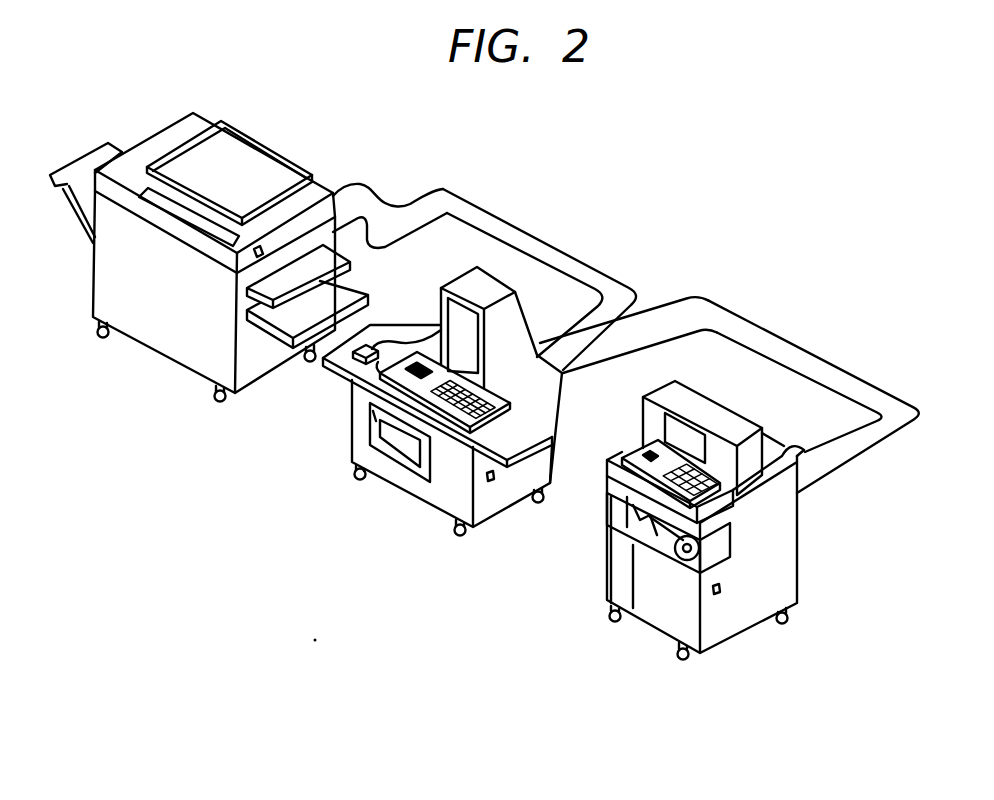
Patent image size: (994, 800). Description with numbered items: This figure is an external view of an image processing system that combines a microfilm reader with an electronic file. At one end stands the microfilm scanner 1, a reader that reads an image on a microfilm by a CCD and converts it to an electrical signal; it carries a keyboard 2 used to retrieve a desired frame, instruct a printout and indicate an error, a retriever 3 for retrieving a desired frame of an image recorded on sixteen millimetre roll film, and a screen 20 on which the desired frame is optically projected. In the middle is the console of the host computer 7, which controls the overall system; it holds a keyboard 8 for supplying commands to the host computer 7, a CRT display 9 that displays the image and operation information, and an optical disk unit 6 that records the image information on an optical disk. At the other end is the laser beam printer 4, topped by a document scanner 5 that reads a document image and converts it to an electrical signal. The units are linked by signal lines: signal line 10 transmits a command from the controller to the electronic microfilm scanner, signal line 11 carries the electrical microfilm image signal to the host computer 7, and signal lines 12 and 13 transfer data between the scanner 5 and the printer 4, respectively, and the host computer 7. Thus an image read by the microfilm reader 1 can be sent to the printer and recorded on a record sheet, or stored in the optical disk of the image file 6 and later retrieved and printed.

The microfilm scanner 1 is at (773, 567).
The keyboard 2 is at (607, 478).
The retriever 3 is at (613, 507).
The laser beam printer 4 is at (110, 267).
The document scanner 5 is at (193, 123).
The optical disk unit 6 is at (403, 457).
The host computer 7 is at (435, 490).
The keyboard 8 is at (380, 395).
The CRT display 9 is at (487, 283).
The signal line 10 is at (603, 392).
The signal line 11 is at (673, 307).
The signal line 12 is at (577, 260).
The signal line 13 is at (485, 220).
The screen 20 is at (680, 437).